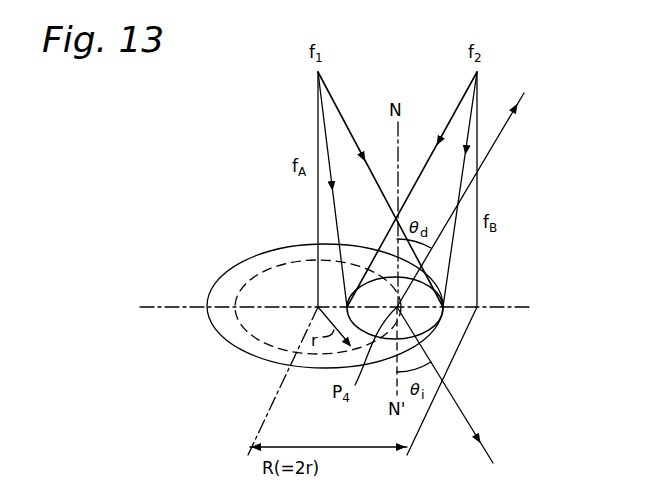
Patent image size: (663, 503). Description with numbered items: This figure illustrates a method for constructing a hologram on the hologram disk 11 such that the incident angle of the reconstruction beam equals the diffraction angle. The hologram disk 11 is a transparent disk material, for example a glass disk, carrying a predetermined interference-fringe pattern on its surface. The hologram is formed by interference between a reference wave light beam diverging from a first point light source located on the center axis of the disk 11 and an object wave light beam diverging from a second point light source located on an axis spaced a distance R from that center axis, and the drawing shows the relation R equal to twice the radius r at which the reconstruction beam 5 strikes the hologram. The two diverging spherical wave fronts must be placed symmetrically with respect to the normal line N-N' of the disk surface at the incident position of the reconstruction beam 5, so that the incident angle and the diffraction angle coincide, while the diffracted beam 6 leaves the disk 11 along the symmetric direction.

The reconstruction beam 5 is at (466, 406).
The incident light beam 6 is at (510, 122).
The hologram disk 11 is at (222, 344).